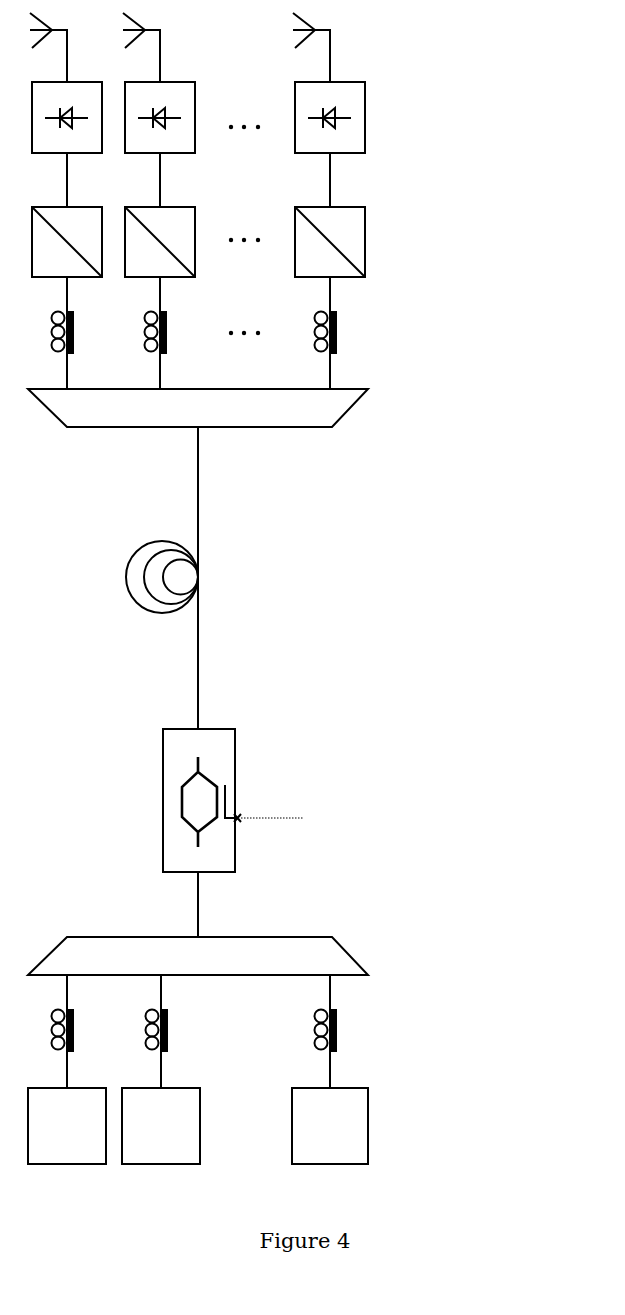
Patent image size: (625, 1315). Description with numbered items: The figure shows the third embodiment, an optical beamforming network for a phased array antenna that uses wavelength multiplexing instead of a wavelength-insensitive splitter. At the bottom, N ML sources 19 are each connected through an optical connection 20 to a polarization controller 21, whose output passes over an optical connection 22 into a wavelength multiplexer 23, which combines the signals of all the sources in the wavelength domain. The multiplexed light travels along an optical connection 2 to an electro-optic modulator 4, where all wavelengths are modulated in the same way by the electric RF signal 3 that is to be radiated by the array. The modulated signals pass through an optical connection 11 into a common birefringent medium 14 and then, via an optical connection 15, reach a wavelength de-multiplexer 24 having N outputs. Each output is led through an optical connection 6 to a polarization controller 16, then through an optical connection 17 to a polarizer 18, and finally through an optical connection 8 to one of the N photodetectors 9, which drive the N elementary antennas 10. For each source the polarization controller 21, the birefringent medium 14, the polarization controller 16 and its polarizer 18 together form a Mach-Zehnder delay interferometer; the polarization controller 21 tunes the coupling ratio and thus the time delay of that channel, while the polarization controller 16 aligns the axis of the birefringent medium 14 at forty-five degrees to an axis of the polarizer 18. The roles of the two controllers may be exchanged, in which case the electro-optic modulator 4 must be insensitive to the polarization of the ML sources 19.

The optical connection 2 is at (217, 902).
The electric RF signal 3 is at (325, 817).
The electro-optic modulator 4 is at (253, 747).
The optical connection 6 is at (350, 370).
The optical connection 8 is at (350, 177).
The photodetectors 9 is at (583, 116).
The elementary antennas 10 is at (350, 36).
The optical connection 11 is at (217, 657).
The birefringent medium 14 is at (217, 576).
The optical connection 15 is at (217, 493).
The polarization controller 16 is at (350, 333).
The optical connection 17 is at (366, 295).
The polarizer 18 is at (583, 238).
The ML sources 19 is at (583, 1127).
The optical connection 20 is at (350, 1071).
The polarization controller 21 is at (350, 1033).
The optical connection 22 is at (350, 995).
The wavelength multiplexer 23 is at (370, 957).
The wavelength de-multiplexer 24 is at (369, 407).